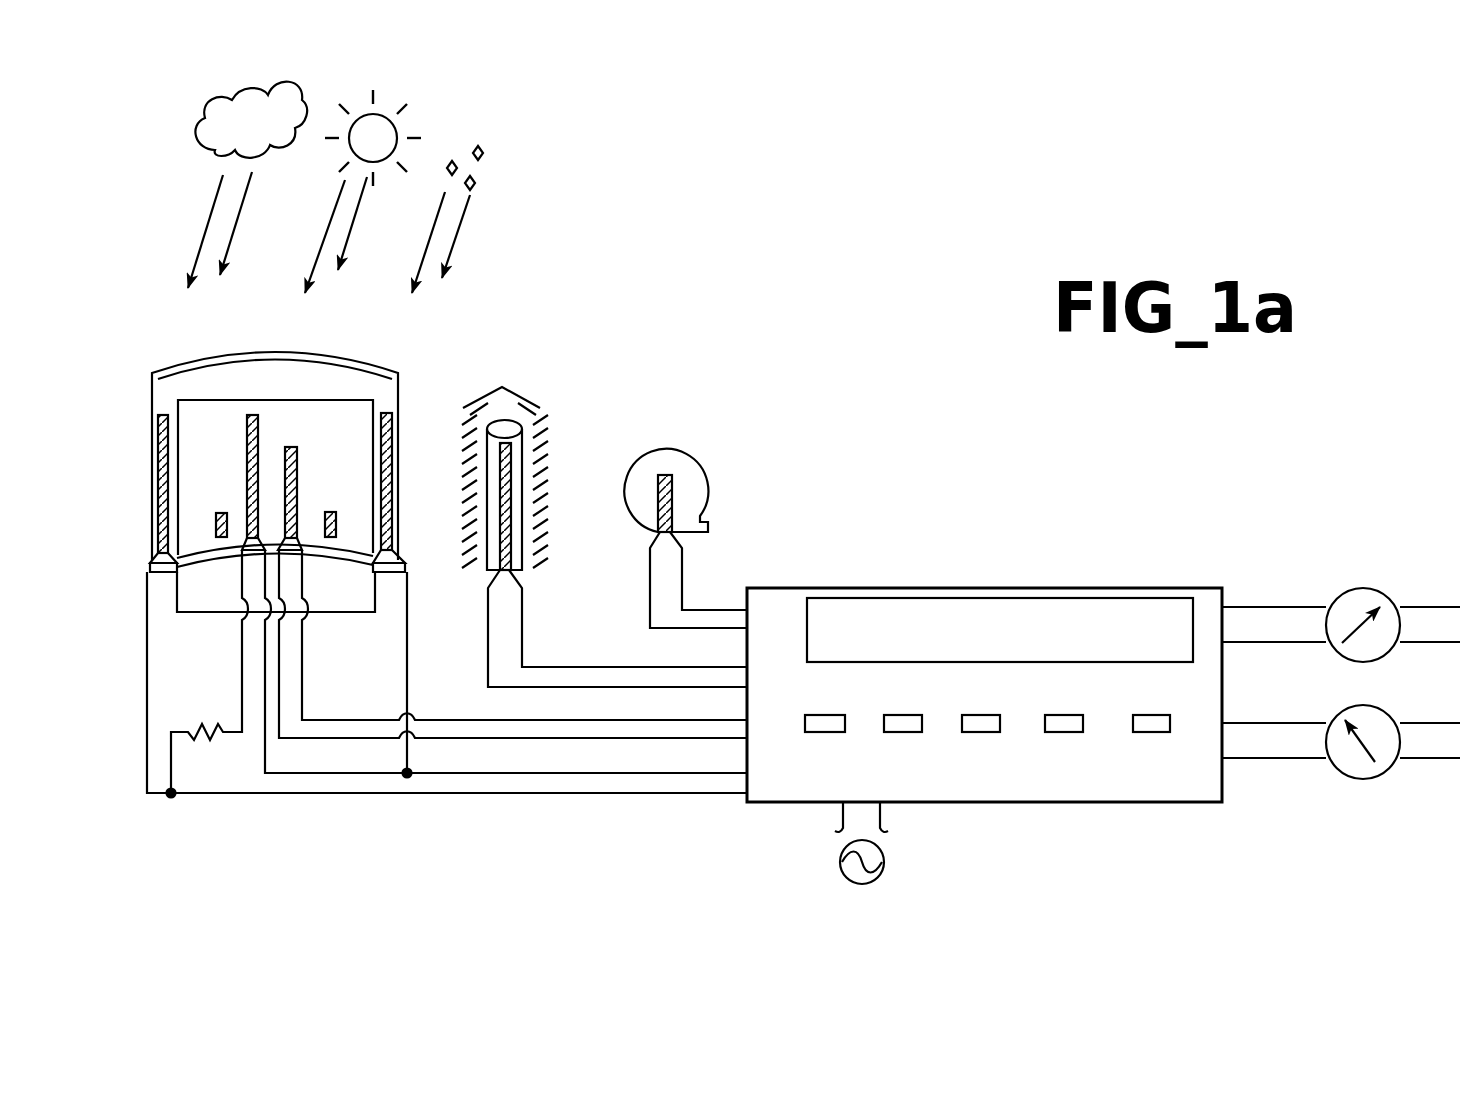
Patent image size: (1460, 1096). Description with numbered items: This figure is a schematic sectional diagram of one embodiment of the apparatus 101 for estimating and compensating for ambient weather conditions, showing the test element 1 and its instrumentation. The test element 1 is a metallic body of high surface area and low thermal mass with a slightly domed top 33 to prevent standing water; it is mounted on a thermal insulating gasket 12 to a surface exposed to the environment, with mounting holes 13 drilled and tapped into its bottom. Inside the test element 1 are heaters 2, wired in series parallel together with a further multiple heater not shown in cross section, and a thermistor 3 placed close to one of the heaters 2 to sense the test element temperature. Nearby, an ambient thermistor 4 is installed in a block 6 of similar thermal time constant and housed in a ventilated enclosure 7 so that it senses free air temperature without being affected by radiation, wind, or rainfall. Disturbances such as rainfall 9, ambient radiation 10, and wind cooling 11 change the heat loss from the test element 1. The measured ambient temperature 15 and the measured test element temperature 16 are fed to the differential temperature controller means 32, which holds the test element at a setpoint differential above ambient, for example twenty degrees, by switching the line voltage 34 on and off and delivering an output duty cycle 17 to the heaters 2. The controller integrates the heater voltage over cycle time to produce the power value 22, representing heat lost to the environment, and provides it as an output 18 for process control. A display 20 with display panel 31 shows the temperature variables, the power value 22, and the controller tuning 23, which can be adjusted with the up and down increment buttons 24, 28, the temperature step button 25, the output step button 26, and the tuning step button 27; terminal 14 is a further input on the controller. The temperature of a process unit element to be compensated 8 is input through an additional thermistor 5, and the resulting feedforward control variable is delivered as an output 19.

The test element 1 is at (425, 547).
The heater 2 is at (158, 427).
The thermistor 3 is at (297, 470).
The ambient thermistor 4 is at (510, 470).
The additional thermistor 5 is at (670, 488).
The block 6 is at (508, 418).
The ventilated enclosure 7 is at (483, 395).
The process unit element to be compensated 8 is at (658, 450).
The rainfall 9 is at (473, 137).
The ambient radiation 10 is at (390, 102).
The wind cooling 11 is at (203, 95).
The thermal insulating gasket 12 is at (148, 560).
The holes 13 is at (218, 515).
The input terminal 14 is at (718, 621).
The measured ambient temperature 15 is at (637, 678).
The measured test element temperature 16 is at (600, 729).
The controller means output 17 is at (596, 781).
The power value output 18 is at (1377, 592).
The feedforward output 19 is at (1380, 777).
The display 20 is at (1197, 607).
The power value 22 is at (1005, 595).
The controller tuning 23 is at (1140, 597).
The up increment function button 24 is at (827, 713).
The temperature step function button 25 is at (900, 713).
The output step function button 26 is at (985, 713).
The tuning step function button 27 is at (1060, 713).
The down increment function button 28 is at (1147, 713).
The display panel 31 is at (1000, 595).
The differential temperature controller means 32 is at (790, 587).
The domed top 33 is at (303, 352).
The line voltage 34 is at (885, 858).
The apparatus 101 is at (450, 810).